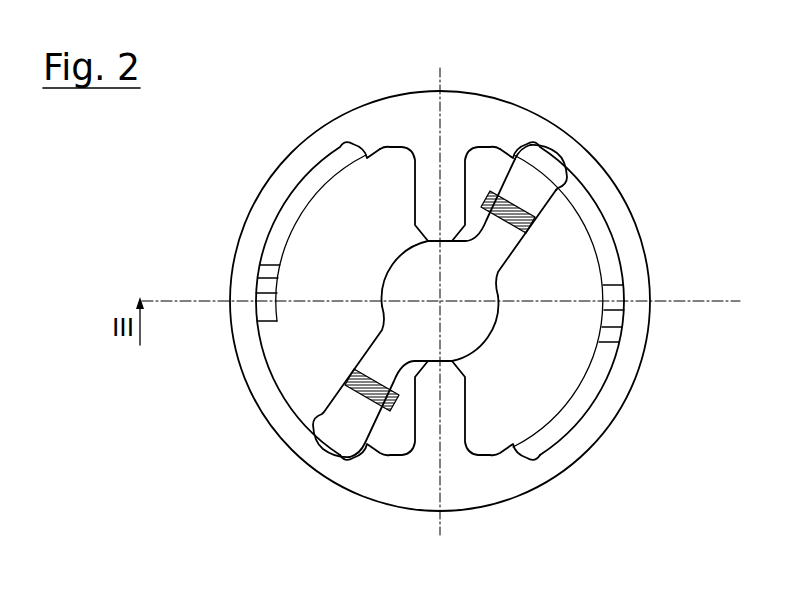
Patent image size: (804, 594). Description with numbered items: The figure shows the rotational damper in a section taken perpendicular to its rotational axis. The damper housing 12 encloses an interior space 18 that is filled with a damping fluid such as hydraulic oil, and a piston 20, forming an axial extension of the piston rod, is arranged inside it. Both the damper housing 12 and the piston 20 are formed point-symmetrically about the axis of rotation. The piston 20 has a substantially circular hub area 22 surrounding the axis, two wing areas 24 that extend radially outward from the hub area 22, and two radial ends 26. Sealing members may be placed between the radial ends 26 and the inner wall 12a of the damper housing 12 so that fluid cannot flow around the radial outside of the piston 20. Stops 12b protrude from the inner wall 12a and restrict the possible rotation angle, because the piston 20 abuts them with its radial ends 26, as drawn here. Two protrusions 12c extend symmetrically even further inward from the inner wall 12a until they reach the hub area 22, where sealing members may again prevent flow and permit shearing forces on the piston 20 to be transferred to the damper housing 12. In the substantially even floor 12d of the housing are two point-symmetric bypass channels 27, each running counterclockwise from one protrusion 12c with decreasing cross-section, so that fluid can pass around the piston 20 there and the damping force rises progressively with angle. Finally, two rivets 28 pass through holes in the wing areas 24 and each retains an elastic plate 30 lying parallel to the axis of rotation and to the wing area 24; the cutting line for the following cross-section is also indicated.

The damper housing 12 is at (352, 496).
The inner wall 12a is at (266, 366).
The stops 12b is at (540, 452).
The protrusions 12c is at (424, 186).
The floor 12d is at (551, 376).
The interior space 18 is at (559, 361).
The piston 20 is at (474, 292).
The hub area 22 is at (398, 274).
The wing areas 24 is at (353, 402).
The radial ends 26 is at (565, 167).
The bypass channels 27 is at (286, 224).
The rivets 28 is at (523, 230).
The elastic plate 30 is at (511, 252).